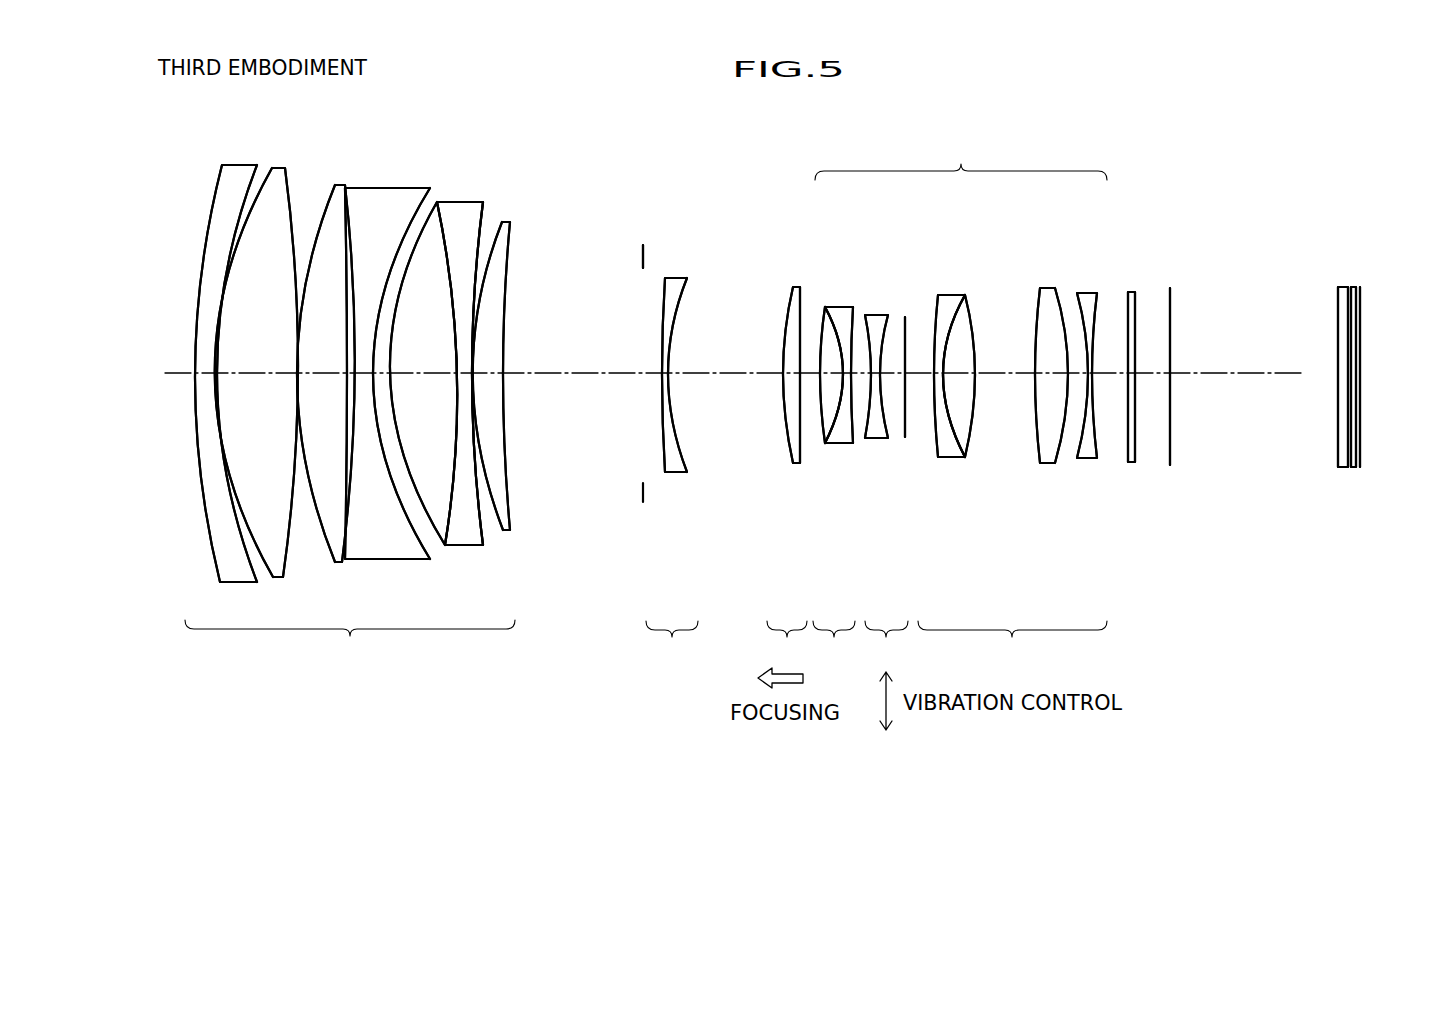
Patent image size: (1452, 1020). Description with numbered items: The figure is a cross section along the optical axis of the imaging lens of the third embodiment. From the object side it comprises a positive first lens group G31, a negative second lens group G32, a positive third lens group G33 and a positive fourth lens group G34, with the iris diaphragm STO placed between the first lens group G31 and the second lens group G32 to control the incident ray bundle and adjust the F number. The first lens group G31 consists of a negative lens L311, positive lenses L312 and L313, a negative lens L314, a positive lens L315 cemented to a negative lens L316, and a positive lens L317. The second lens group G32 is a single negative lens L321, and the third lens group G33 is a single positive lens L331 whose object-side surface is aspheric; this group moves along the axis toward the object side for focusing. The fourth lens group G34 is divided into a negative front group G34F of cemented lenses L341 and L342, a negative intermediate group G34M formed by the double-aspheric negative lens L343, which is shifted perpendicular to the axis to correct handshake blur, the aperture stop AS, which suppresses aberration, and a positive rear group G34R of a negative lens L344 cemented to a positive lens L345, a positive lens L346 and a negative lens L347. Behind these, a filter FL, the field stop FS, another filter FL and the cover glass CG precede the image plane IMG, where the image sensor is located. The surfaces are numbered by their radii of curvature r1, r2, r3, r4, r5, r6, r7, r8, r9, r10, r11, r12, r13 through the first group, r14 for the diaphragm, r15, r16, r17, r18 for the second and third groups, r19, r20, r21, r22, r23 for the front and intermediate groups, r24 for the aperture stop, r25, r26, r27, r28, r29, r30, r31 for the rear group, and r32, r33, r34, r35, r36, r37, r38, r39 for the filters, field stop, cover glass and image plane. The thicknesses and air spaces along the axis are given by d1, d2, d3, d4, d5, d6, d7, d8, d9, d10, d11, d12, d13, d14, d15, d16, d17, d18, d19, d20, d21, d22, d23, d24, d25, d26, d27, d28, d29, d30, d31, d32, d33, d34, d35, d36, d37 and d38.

The negative lens L311 is at (228, 182).
The positive lens L312 is at (282, 167).
The positive lens L313 is at (334, 183).
The negative lens L314 is at (397, 210).
The positive lens L315 is at (460, 220).
The negative lens L316 is at (482, 220).
The positive lens L317 is at (505, 243).
The negative lens L321 is at (675, 290).
The positive lens L331 is at (792, 290).
The negative lens L341 is at (822, 305).
The positive lens L342 is at (836, 305).
The negative lens L343 is at (875, 323).
The negative lens L344 is at (955, 297).
The positive lens L345 is at (973, 302).
The positive lens L346 is at (1043, 297).
The negative lens L347 is at (1087, 300).
The first lens group G31 is at (350, 642).
The second lens group G32 is at (672, 642).
The third lens group G33 is at (787, 642).
The fourth lens group G34 is at (961, 160).
The front group G34F is at (836, 642).
The intermediate group G34M is at (889, 642).
The rear group G34R is at (1012, 642).
The iris diaphragm STO is at (643, 245).
The aperture stop AS is at (918, 314).
The filter FL is at (1133, 292).
The field stop FS is at (1170, 288).
The cover glass CG is at (1352, 287).
The image plane IMG is at (1362, 296).
The radius of curvature r1 is at (212, 223).
The radius of curvature r2 is at (247, 190).
The radius of curvature r3 is at (267, 175).
The radius of curvature r4 is at (287, 182).
The radius of curvature r5 is at (318, 235).
The radius of curvature r6 is at (345, 183).
The radius of curvature r7 is at (353, 213).
The radius of curvature r8 is at (407, 243).
The radius of curvature r9 is at (423, 235).
The radius of curvature r10 is at (452, 227).
The radius of curvature r11 is at (483, 213).
The radius of curvature r12 is at (493, 260).
The radius of curvature r13 is at (503, 320).
The radius of curvature r14 is at (643, 258).
The radius of curvature r15 is at (662, 342).
The radius of curvature r16 is at (675, 333).
The radius of curvature r17 is at (783, 358).
The radius of curvature r18 is at (798, 335).
The radius of curvature r19 is at (822, 308).
The radius of curvature r20 is at (822, 325).
The radius of curvature r21 is at (850, 318).
The radius of curvature r22 is at (867, 307).
The radius of curvature r23 is at (897, 307).
The radius of curvature r24 is at (908, 340).
The radius of curvature r25 is at (933, 292).
The radius of curvature r26 is at (970, 293).
The radius of curvature r27 is at (975, 355).
The radius of curvature r28 is at (1038, 318).
The radius of curvature r29 is at (1057, 290).
The radius of curvature r30 is at (1078, 305).
The radius of curvature r31 is at (1098, 297).
The radius of curvature r32 is at (1128, 347).
The radius of curvature r33 is at (1137, 347).
The radius of curvature r34 is at (1170, 308).
The radius of curvature r35 is at (1338, 352).
The radius of curvature r36 is at (1345, 327).
The radius of curvature r37 is at (1345, 300).
The radius of curvature r38 is at (1356, 321).
The radius of curvature r39 is at (1360, 350).
The thickness d1 is at (205, 374).
The distance between surfaces d2 is at (215, 380).
The thickness d3 is at (263, 374).
The distance between surfaces d4 is at (297, 378).
The thickness d5 is at (331, 377).
The distance between surfaces d6 is at (344, 380).
The thickness d7 is at (370, 380).
The distance between surfaces d8 is at (382, 378).
The thickness d9 is at (434, 378).
The thickness d10 is at (463, 378).
The distance between surfaces d11 is at (480, 378).
The thickness d12 is at (483, 375).
The distance between surfaces d13 is at (583, 378).
The distance between surfaces d14 is at (652, 378).
The thickness d15 is at (668, 378).
The distance between surfaces d16 is at (748, 378).
The thickness d17 is at (792, 378).
The distance between surfaces d18 is at (803, 380).
The thickness d19 is at (813, 380).
The thickness d20 is at (843, 380).
The distance between surfaces d21 is at (860, 380).
The thickness d22 is at (876, 380).
The distance between surfaces d23 is at (895, 380).
The distance between surfaces d24 is at (920, 378).
The thickness d25 is at (935, 380).
The thickness d26 is at (953, 380).
The distance between surfaces d27 is at (1017, 380).
The thickness d28 is at (1037, 382).
The distance between surfaces d29 is at (1052, 380).
The thickness d30 is at (1090, 380).
The distance between surfaces d31 is at (1110, 380).
The thickness d32 is at (1132, 465).
The distance between surfaces d33 is at (1162, 378).
The distance between surfaces d34 is at (1235, 378).
The thickness d35 is at (1340, 378).
The distance between surfaces d36 is at (1344, 385).
The thickness d37 is at (1358, 385).
The distance between surfaces d38 is at (1358, 378).